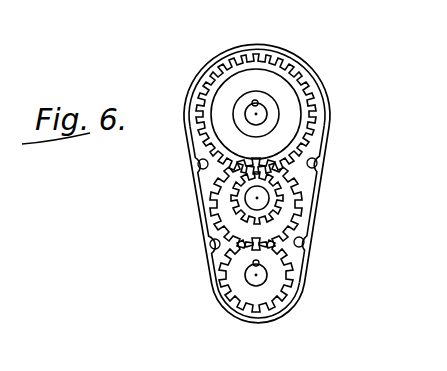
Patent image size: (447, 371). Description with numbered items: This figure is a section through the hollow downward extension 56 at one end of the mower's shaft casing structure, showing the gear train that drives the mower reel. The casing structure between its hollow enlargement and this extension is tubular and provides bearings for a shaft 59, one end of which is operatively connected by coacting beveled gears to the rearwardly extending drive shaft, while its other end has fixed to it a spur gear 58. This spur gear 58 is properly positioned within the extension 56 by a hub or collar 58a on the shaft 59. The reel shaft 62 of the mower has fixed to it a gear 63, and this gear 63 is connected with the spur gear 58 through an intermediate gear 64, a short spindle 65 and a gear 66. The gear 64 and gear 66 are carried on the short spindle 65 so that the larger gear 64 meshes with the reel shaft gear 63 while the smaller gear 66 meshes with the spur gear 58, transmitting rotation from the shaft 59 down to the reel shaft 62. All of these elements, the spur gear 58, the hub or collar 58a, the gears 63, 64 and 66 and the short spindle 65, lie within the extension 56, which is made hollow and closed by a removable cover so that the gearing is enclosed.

The downward extension 56 is at (208, 62).
The spur gear 58 is at (298, 80).
The hub or collar 58a is at (268, 114).
The shaft 59 is at (255, 113).
The reel shaft 62 is at (263, 278).
The gear 63 is at (253, 289).
The gear 64 is at (225, 212).
The short spindle 65 is at (269, 198).
The gear 66 is at (241, 194).